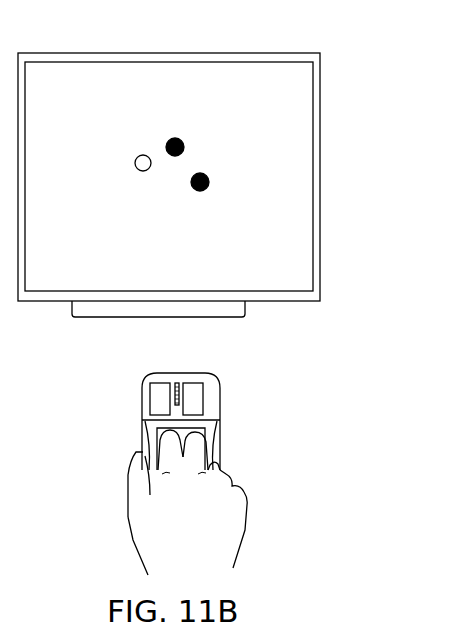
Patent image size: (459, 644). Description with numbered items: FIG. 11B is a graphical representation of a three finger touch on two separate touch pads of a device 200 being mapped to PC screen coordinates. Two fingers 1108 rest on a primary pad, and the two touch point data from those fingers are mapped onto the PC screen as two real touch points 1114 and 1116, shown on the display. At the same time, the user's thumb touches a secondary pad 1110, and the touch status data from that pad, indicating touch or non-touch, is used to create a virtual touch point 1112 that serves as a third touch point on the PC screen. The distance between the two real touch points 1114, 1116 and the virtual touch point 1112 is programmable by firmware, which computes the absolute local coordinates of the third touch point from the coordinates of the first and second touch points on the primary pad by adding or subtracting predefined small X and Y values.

The mouse 200 is at (238, 379).
The two fingers 1108 is at (192, 447).
The secondary pad 1110 is at (142, 452).
The virtual touch point 1112 is at (143, 155).
The touch point 1114 is at (180, 138).
The touch point 1116 is at (204, 173).